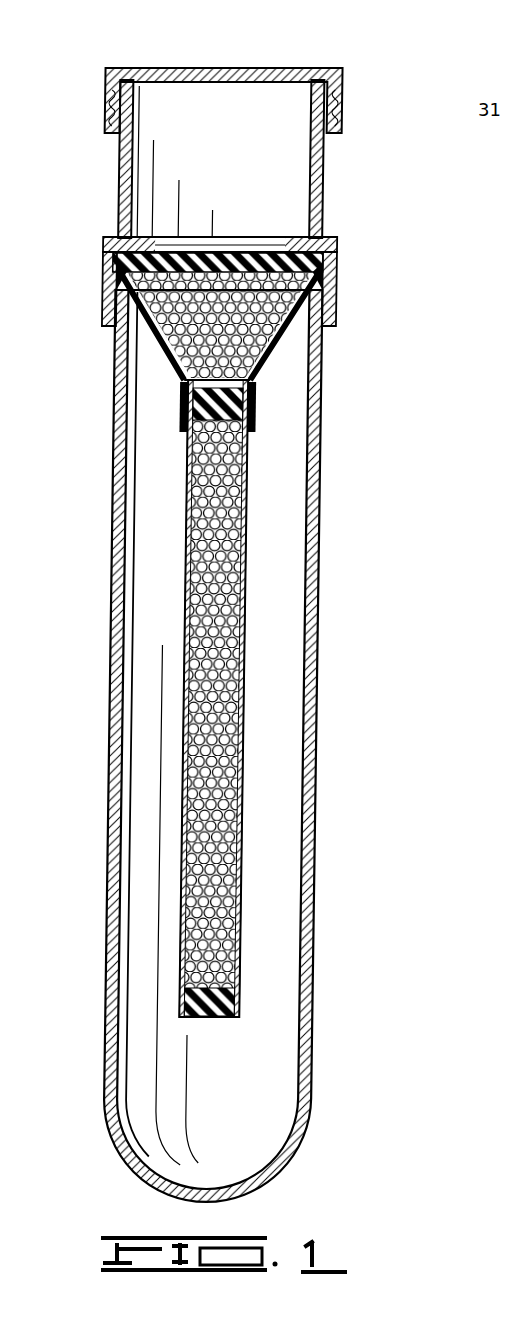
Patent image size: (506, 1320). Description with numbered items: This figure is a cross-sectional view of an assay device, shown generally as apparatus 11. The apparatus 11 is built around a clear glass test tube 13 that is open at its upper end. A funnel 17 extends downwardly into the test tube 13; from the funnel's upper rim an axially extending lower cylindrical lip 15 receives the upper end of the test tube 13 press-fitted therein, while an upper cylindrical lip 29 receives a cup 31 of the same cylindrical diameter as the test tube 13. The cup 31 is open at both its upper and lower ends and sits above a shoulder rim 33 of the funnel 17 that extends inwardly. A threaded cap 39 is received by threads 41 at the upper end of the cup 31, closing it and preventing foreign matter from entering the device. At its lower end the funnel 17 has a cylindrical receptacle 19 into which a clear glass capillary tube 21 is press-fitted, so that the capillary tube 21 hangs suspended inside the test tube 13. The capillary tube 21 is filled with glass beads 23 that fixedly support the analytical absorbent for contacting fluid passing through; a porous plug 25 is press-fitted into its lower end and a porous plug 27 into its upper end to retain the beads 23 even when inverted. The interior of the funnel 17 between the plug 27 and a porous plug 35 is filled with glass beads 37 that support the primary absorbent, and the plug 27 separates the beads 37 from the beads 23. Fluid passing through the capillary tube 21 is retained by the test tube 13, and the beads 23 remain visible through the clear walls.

The apparatus 11 is at (101, 203).
The test tube 13 is at (318, 533).
The lower cylindrical lip 15 is at (338, 308).
The funnel 17 is at (265, 352).
The cylindrical receptacle 19 is at (182, 415).
The capillary tube 21 is at (243, 703).
The glass beads 23 is at (240, 780).
The plug 25 is at (238, 998).
The plug 27 is at (255, 408).
The upper cylindrical lip 29 is at (103, 241).
The cup 31 is at (313, 187).
The shoulder rim 33 is at (335, 270).
The plug 35 is at (113, 274).
The glass beads 37 is at (168, 345).
The threaded cap 39 is at (228, 68).
The threads 41 is at (485, 42).